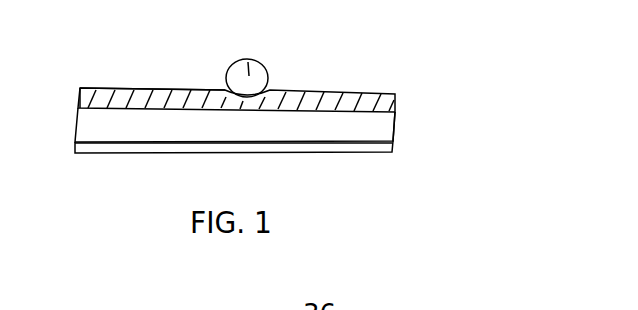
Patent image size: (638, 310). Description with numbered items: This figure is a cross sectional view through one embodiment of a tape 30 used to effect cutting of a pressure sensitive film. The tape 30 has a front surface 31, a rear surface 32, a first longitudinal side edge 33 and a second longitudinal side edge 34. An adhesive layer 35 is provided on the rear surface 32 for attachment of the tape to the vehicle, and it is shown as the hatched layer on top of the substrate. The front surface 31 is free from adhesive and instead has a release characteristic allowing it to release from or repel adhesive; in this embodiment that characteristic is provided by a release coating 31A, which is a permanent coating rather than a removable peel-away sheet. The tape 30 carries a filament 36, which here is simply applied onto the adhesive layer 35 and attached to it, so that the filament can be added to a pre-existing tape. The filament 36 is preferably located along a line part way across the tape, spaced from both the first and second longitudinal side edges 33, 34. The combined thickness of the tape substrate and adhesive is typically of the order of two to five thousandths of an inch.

The tape 30 is at (422, 134).
The front surface 31 is at (334, 148).
The release coating 31A is at (102, 152).
The rear surface 32 is at (332, 92).
The first longitudinal side edge 33 is at (75, 130).
The second longitudinal side edge 34 is at (395, 133).
The adhesive layer 35 is at (100, 88).
The filament 36 is at (250, 62).